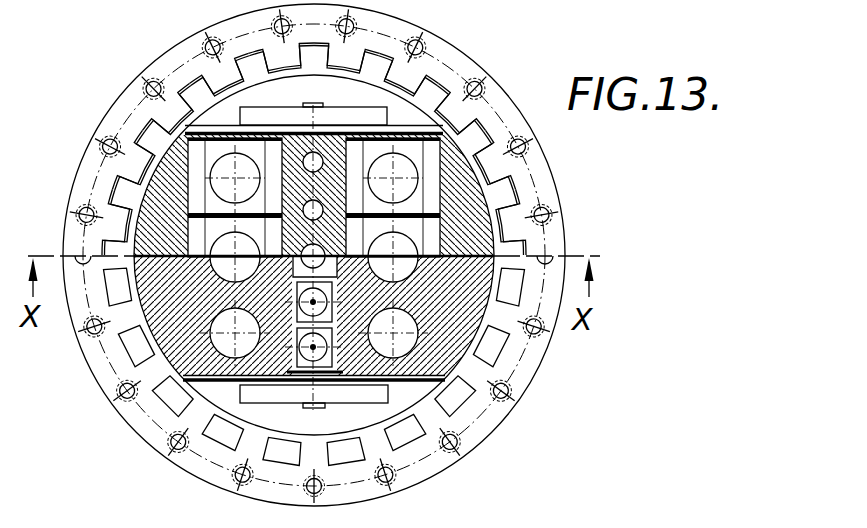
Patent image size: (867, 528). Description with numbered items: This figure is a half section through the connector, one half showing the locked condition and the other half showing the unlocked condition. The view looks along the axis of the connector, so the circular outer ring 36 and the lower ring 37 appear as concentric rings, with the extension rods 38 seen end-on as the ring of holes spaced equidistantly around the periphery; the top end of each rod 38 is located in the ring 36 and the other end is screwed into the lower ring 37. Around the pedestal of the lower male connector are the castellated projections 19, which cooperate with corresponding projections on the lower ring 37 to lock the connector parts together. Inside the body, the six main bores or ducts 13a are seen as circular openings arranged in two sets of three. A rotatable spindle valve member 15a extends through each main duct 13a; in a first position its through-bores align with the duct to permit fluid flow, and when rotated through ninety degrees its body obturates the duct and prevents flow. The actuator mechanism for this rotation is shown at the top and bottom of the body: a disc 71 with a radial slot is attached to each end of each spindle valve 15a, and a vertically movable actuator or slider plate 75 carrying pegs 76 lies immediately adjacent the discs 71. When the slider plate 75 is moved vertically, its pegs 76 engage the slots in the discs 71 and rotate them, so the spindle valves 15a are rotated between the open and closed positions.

The main bores or ducts 13a is at (225, 342).
The spindle valve member 15a is at (190, 161).
The castellated projections 19 is at (73, 196).
The ring 36 is at (445, 66).
The lower ring 37 is at (170, 108).
The extension rods 38 is at (515, 220).
The disc 71 is at (185, 91).
The actuator or slider plate 75 is at (283, 113).
The pegs 76 is at (262, 107).